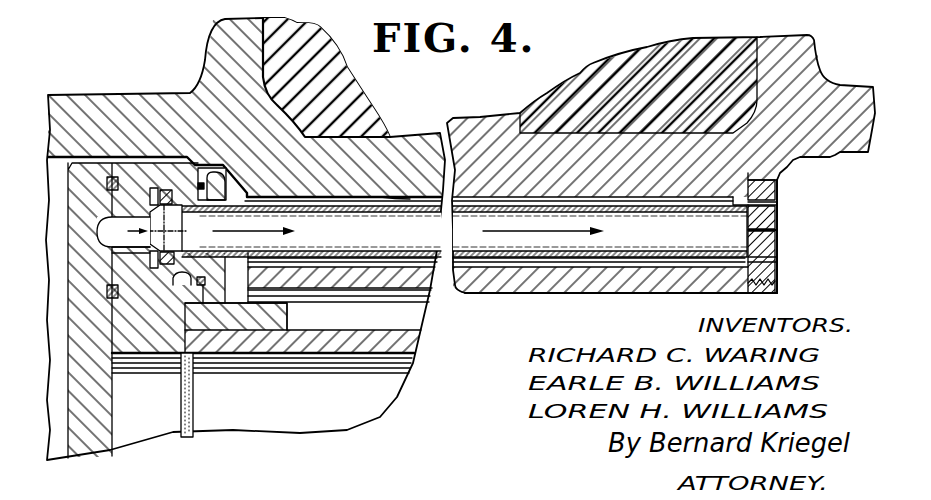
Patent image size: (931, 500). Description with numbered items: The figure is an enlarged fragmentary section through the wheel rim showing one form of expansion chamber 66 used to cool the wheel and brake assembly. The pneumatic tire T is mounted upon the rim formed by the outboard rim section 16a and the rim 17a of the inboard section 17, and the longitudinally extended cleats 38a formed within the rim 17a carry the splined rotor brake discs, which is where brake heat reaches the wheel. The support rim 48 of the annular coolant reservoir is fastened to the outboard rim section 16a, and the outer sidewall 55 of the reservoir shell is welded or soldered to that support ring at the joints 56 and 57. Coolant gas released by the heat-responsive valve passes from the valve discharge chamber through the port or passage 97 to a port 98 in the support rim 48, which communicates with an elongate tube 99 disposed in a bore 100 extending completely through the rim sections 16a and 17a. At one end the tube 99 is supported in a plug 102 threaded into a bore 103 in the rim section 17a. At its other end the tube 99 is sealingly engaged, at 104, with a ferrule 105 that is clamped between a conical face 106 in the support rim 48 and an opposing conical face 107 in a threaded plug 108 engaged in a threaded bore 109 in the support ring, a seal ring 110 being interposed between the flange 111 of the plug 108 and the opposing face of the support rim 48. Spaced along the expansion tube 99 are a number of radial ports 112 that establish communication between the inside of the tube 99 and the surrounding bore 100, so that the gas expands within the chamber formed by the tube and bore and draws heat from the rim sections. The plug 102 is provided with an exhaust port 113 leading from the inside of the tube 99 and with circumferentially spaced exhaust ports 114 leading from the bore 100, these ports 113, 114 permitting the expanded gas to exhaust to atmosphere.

The inboard section 17 is at (818, 45).
The rim 17a is at (697, 295).
The outboard rim section 16a is at (422, 280).
The longitudinally extended cleats 38a is at (560, 286).
The support rim 48 is at (145, 340).
The outer sidewall 55 is at (392, 348).
The weld 56 is at (180, 375).
The weld 57 is at (288, 326).
The expansion chamber 66 is at (391, 268).
The port or passage 97 is at (97, 231).
The port 98 is at (128, 213).
The elongate tube 99 is at (380, 197).
The bore 100 is at (614, 198).
The plug 102 is at (775, 218).
The bore 103 is at (752, 178).
The sealing engagement 104 is at (202, 200).
The ferrule 105 is at (143, 213).
The conical face 106 is at (140, 244).
The opposing conical face 107 is at (186, 233).
The threaded plug 108 is at (229, 196).
The threaded bore 109 is at (185, 274).
The seal ring 110 is at (201, 286).
The flange 111 is at (232, 280).
The radial ports 112 is at (559, 201).
The exhaust port 113 is at (777, 230).
The exhaust ports 114 is at (777, 203).
The pneumatic tire T is at (287, 44).